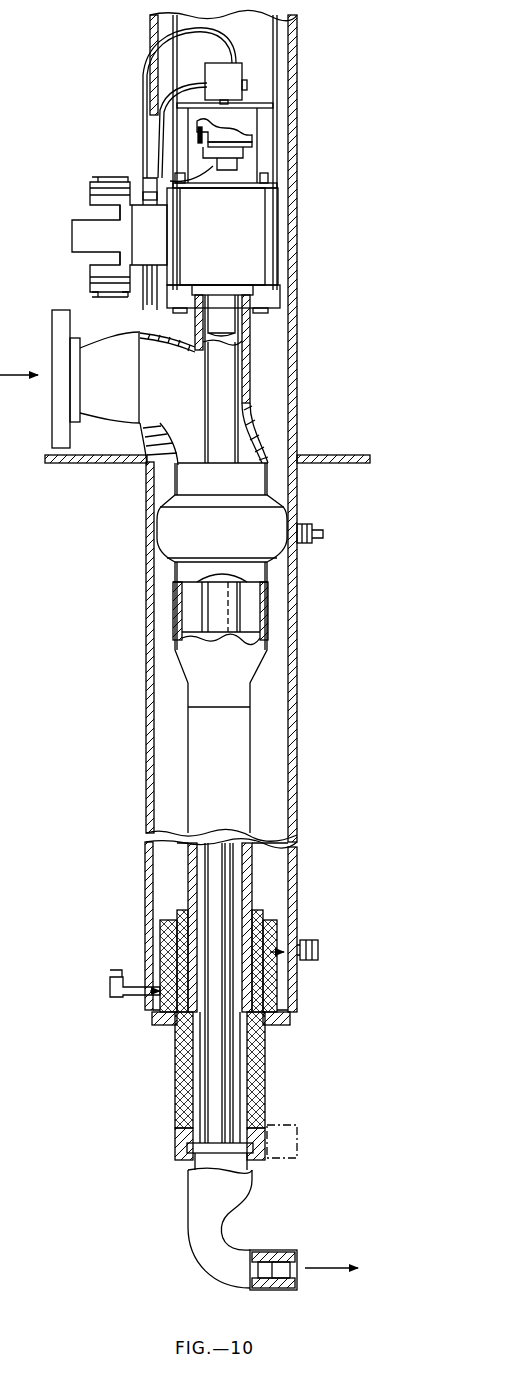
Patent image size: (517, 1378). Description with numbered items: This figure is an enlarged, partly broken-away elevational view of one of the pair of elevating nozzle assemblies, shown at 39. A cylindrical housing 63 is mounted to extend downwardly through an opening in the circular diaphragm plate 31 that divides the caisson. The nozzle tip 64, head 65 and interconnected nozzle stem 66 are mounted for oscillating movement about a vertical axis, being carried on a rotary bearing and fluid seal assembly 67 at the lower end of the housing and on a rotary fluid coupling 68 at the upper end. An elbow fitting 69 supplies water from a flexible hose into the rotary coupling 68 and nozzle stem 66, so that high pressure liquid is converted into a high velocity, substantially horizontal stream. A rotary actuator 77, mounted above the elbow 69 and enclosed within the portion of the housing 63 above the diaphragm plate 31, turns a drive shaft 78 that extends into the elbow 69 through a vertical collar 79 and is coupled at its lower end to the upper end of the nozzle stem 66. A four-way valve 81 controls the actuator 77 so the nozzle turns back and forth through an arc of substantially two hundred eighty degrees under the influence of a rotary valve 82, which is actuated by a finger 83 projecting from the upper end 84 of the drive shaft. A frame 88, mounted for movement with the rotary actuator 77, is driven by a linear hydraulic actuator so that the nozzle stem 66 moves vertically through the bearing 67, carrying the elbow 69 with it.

The diaphragm plate 31 is at (346, 460).
The elevating nozzle assembly 39 is at (304, 816).
The cylindrical housing 63 is at (293, 698).
The nozzle tip 64 is at (283, 1252).
The head 65 is at (197, 1214).
The nozzle stem 66 is at (188, 865).
The rotary bearing and fluid seal assembly 67 is at (168, 908).
The rotary fluid coupling 68 is at (177, 532).
The elbow fitting 69 is at (122, 413).
The rotary actuator 77 is at (250, 245).
The drive shaft 78 is at (223, 431).
The vertical collar 79 is at (245, 353).
The four-way valve 81 is at (145, 227).
The rotary valve 82 is at (232, 63).
The finger 83 is at (198, 134).
The upper end of the actuator drive shaft 84 is at (170, 181).
The frame 88 is at (276, 64).